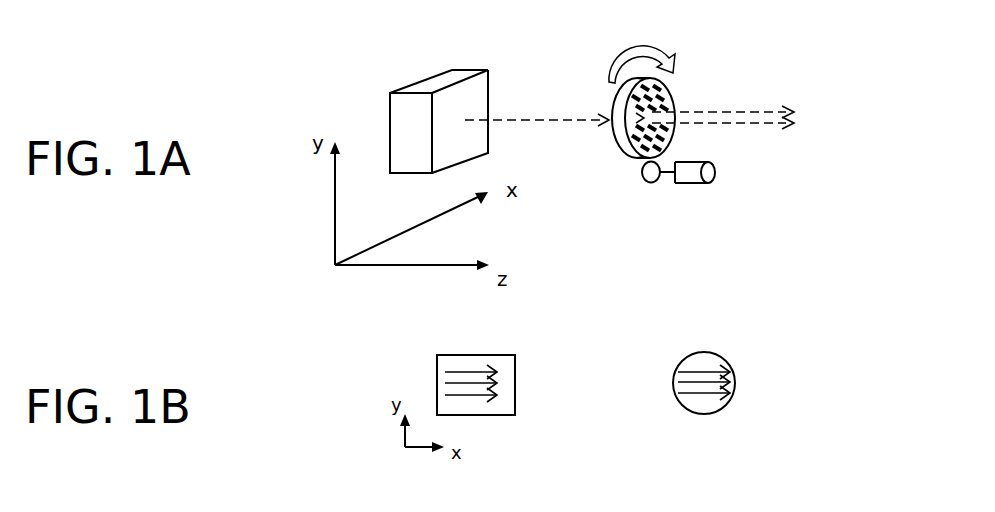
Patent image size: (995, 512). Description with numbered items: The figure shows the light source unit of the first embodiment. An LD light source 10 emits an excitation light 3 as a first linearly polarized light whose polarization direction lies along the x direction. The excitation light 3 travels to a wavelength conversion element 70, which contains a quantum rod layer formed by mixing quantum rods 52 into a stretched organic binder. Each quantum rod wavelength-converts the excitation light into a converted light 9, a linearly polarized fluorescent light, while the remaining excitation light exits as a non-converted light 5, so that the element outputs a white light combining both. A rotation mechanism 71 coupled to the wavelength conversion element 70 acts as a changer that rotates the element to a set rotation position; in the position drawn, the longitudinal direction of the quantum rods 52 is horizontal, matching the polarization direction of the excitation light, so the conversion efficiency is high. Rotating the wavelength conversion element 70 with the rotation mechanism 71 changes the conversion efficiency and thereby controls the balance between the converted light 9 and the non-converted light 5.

In FIG. 1A, the LD light source 10 is at (437, 70).
In FIG. 1B, the LD light source 10 is at (503, 415).
In FIG. 1A, the excitation light 3 is at (537, 120).
In FIG. 1A, the wavelength conversion element 70 is at (615, 95).
In FIG. 1B, the wavelength conversion element 70 is at (698, 414).
In FIG. 1A, the quantum rods 52 is at (637, 140).
In FIG. 1A, the converted light 9 is at (742, 108).
In FIG. 1A, the non-converted light 5 is at (748, 128).
In FIG. 1A, the rotation mechanism 71 is at (690, 175).